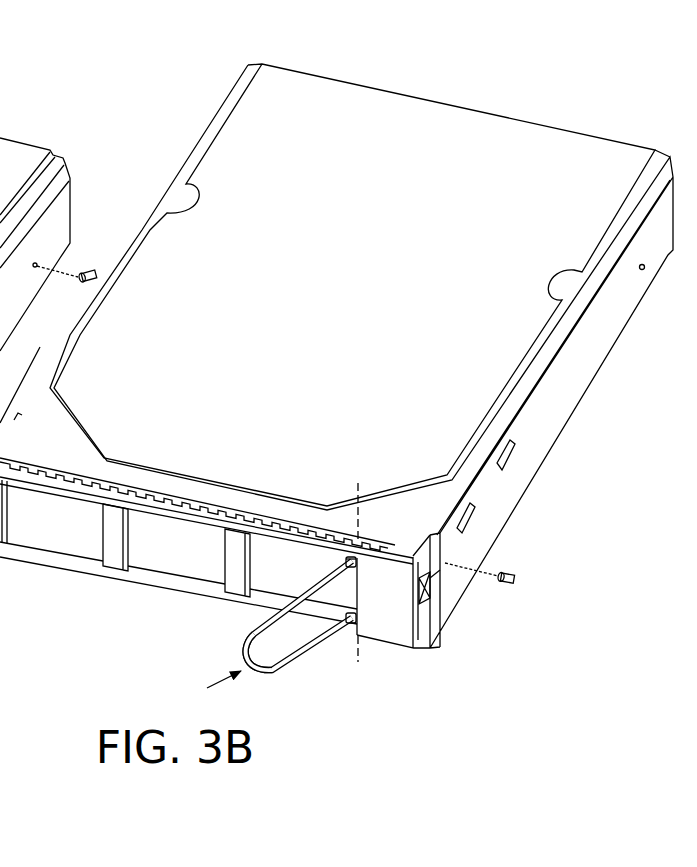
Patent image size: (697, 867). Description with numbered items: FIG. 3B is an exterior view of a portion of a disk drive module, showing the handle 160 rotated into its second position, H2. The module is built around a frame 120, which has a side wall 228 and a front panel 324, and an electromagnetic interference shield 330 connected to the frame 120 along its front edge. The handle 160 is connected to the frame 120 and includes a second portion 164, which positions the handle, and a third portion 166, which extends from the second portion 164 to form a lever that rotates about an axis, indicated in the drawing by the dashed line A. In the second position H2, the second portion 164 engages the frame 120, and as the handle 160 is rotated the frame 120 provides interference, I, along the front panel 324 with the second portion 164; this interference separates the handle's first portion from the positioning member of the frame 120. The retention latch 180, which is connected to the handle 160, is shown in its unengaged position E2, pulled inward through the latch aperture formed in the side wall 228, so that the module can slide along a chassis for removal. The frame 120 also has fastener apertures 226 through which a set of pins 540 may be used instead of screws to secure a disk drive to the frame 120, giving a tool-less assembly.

The frame 120 is at (559, 419).
The side wall 228 is at (503, 497).
The front panel 324 is at (376, 636).
The electromagnetic interference (EMI) shield 330 is at (73, 470).
The handle 160 is at (285, 674).
The second portion 164 is at (345, 561).
The third portion 166 is at (246, 648).
The retention latch 180 is at (422, 592).
The fastener aperture 226 is at (37, 268).
The set of pins 540 is at (90, 270).
The axis A is at (355, 560).
The interference I is at (357, 562).
The unengaged position E2 is at (445, 567).
The second position H2 is at (211, 688).